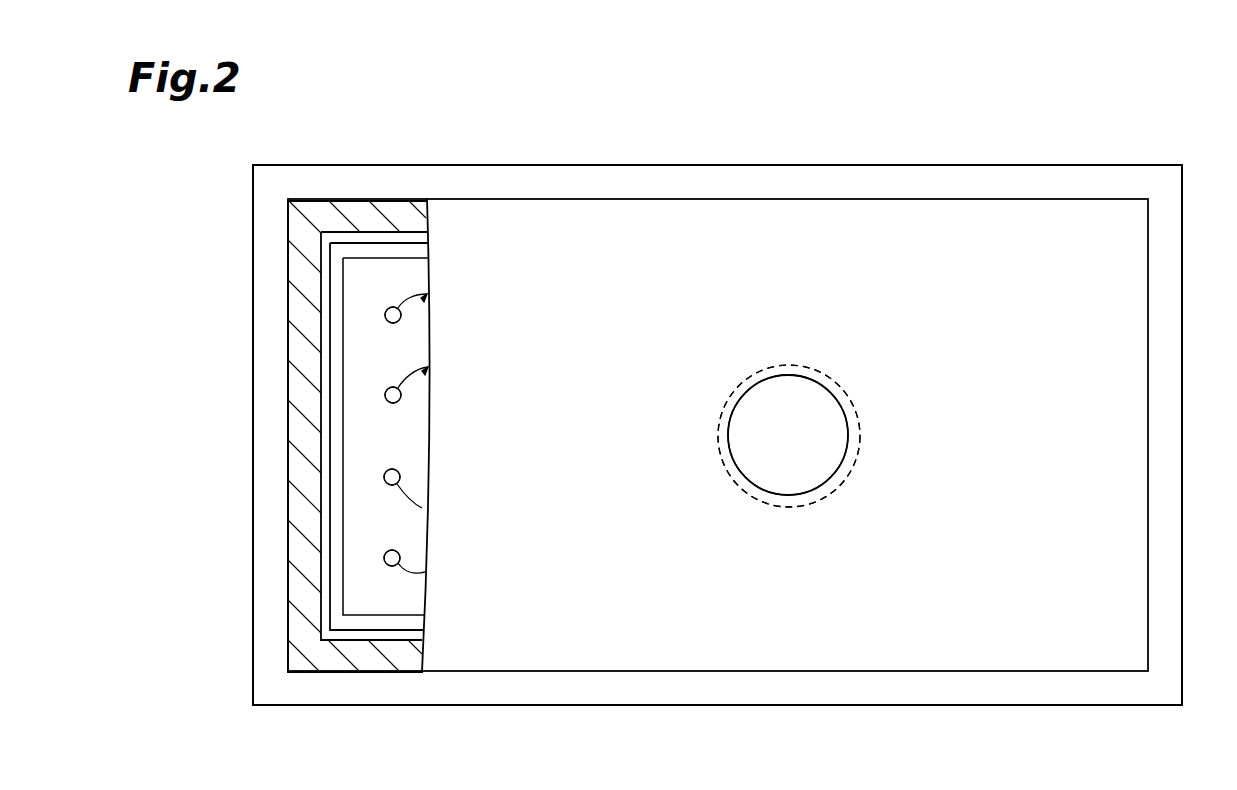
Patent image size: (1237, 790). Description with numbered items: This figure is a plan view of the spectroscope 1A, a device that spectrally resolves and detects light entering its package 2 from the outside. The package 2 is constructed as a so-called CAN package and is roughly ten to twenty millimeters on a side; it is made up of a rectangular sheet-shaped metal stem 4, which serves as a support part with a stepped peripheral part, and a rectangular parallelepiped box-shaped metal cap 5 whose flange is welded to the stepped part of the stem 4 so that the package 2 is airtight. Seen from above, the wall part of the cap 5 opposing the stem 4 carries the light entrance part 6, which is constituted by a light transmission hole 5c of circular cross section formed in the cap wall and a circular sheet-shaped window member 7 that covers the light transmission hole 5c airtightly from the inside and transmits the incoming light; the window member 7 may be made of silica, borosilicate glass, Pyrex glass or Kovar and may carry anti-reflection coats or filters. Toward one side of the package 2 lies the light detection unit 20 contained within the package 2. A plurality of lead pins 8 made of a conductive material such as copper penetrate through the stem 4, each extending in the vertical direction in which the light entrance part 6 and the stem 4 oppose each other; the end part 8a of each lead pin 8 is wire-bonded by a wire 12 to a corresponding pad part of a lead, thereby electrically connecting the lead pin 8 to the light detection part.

The spectroscope 1A is at (1172, 143).
The package 2 is at (1148, 243).
The stem 4 is at (330, 292).
The cap 5 is at (1080, 199).
The light transmission hole 5c is at (733, 415).
The light entrance part 6 is at (757, 293).
The window member 7 is at (825, 368).
The lead pin 8 is at (388, 308).
The end part of lead pin 8a is at (393, 315).
The wire 12 is at (428, 292).
The light detection unit 20 is at (323, 336).